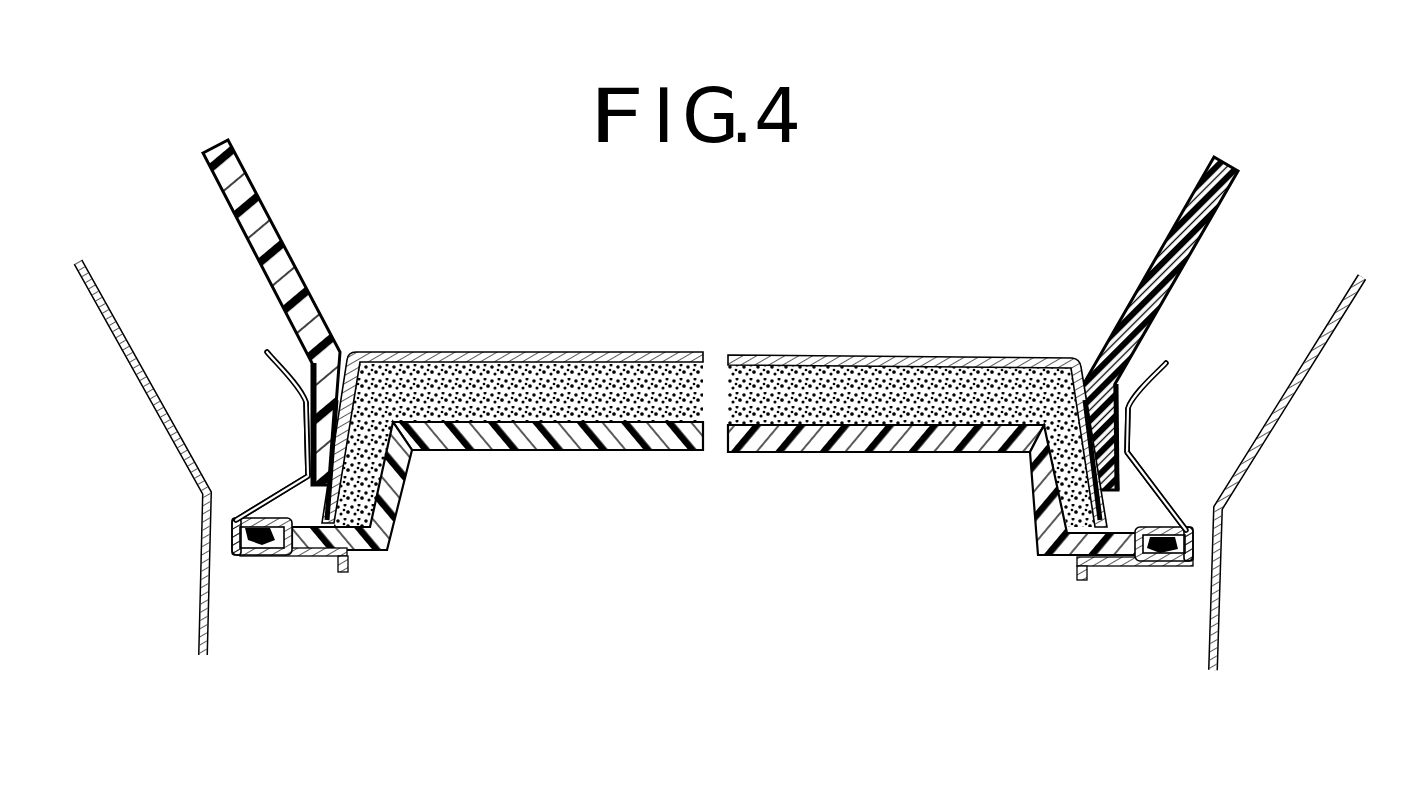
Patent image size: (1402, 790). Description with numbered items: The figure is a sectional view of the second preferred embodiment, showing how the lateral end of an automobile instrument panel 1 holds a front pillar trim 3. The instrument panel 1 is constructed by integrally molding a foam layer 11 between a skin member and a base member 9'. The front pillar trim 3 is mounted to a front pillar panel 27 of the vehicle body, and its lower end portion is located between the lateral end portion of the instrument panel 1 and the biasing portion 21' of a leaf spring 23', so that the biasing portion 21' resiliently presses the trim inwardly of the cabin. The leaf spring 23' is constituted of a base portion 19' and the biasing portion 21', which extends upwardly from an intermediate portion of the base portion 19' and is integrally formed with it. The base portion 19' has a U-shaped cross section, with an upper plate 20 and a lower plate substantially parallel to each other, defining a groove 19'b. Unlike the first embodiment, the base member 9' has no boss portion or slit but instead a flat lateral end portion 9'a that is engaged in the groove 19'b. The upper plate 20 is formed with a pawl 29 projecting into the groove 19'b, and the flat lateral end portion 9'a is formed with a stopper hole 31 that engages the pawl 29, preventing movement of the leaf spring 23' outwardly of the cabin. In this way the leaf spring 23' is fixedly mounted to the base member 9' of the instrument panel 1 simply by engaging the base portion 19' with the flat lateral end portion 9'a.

The instrument panel 1 is at (714, 432).
The front pillar trim 3 is at (293, 277).
The base member 9' is at (714, 519).
The flat lateral end portion 9'a is at (714, 519).
The foam layer 11 is at (918, 378).
The base portion 19' is at (717, 592).
The groove 19'b is at (717, 526).
The upper plate 20 is at (270, 517).
The biasing portion 21' is at (731, 407).
The leaf spring 23' is at (731, 429).
The front pillar panel 27 is at (121, 348).
The pawl 29 is at (278, 540).
The stopper hole 31 is at (290, 555).